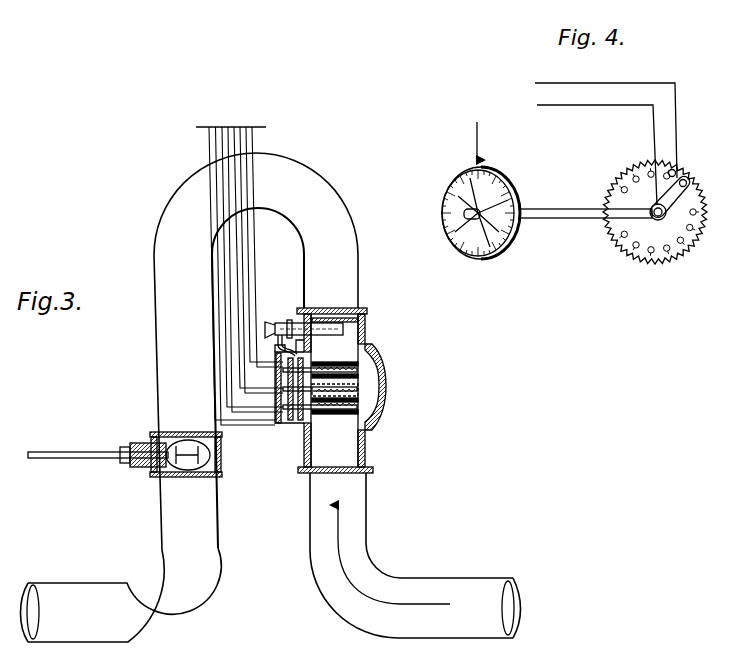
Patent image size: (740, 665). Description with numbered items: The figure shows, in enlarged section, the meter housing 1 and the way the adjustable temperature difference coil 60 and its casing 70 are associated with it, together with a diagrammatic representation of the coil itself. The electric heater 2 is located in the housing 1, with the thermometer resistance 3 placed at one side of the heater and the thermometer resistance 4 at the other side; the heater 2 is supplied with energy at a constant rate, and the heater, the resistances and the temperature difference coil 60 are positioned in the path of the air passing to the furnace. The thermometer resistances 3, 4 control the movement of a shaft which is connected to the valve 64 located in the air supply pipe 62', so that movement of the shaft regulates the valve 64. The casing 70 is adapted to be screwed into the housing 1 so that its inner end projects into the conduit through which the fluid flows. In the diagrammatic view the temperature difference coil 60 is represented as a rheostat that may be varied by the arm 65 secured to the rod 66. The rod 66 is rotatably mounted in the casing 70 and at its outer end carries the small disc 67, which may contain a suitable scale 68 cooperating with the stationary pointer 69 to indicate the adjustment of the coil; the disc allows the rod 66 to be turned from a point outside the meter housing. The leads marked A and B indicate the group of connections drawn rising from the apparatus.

In FIG. 3, the housing 1 is at (366, 451).
In FIG. 3, the electric heater 2 is at (357, 387).
In FIG. 3, the thermometer resistance 3 is at (357, 405).
In FIG. 3, the thermometer resistance 4 is at (357, 372).
In FIG. 3, the adjustable temperature difference coil 60 is at (340, 323).
In FIG. 4, the adjustable temperature difference coil 60 is at (651, 266).
In FIG. 3, the air supply pipe 62' is at (271, 397).
In FIG. 3, the valve 64 is at (222, 458).
In FIG. 4, the arm 65 is at (667, 197).
In FIG. 4, the rod 66 is at (553, 208).
In FIG. 4, the disc 67 is at (482, 190).
In FIG. 4, the scale 68 is at (518, 248).
In FIG. 4, the stationary pointer 69 is at (479, 134).
In FIG. 3, the casing 70 is at (322, 323).
In FIG. 3, the tube line A is at (220, 128).
In FIG. 3, the tube line B is at (275, 128).